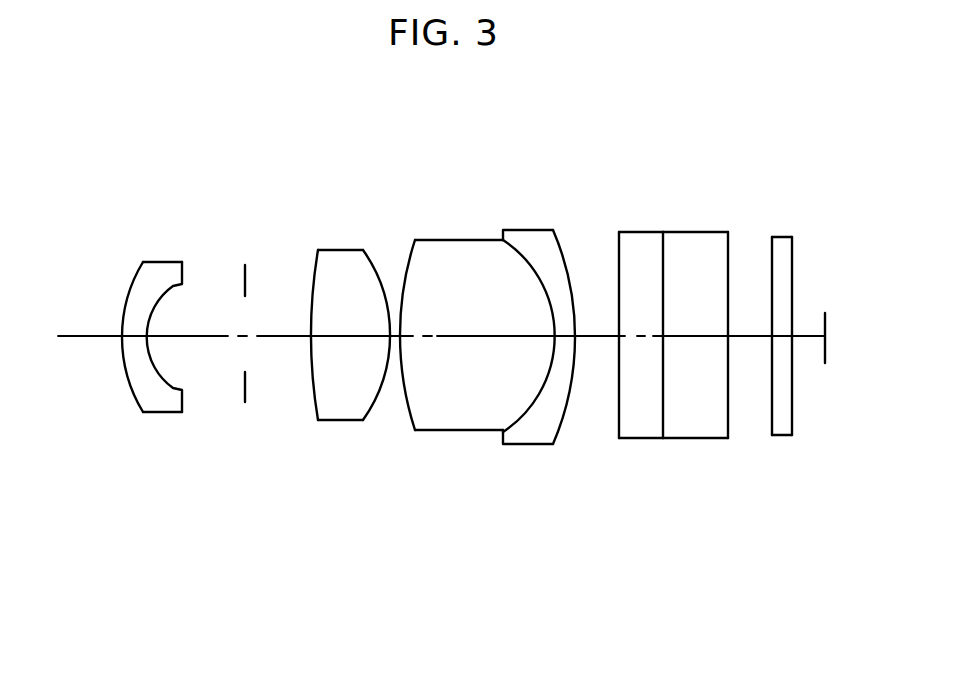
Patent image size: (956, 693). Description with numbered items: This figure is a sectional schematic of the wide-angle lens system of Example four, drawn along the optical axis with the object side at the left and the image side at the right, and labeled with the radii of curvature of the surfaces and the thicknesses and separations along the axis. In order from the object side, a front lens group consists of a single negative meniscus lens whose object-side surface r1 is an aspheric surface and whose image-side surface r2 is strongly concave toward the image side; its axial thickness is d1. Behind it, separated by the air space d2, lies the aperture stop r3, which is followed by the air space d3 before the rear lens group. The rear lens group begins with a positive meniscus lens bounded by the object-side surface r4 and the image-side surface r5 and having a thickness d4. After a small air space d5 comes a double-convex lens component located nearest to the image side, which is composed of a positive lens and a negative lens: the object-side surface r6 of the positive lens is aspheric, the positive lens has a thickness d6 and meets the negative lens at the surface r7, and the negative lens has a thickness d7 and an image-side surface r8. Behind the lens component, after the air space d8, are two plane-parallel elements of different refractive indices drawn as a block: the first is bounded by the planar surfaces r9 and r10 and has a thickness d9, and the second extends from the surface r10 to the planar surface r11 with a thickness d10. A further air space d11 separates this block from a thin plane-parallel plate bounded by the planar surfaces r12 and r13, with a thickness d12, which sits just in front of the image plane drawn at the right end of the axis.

The object-side surface of the negative meniscus lens r1 is at (143, 266).
The image-side surface of the negative meniscus lens r2 is at (188, 284).
The aperture stop r3 is at (243, 278).
The object-side surface of the positive meniscus lens r4 is at (322, 290).
The image-side surface of the positive meniscus lens r5 is at (377, 265).
The object-side surface of the positive lens of the double-convex lens component r6 is at (408, 258).
The cemented surface between the positive and negative lenses r7 is at (528, 258).
The image-side surface of the double-convex lens component r8 is at (569, 258).
The object-side surface of the first plane-parallel element r9 is at (618, 255).
The boundary surface between the plane-parallel elements r10 is at (662, 250).
The image-side surface of the second plane-parallel element r11 is at (727, 253).
The object-side surface of the plane-parallel plate r12 is at (772, 253).
The image-side surface of the plane-parallel plate r13 is at (793, 253).
The thickness of the negative meniscus lens d1 is at (135, 338).
The separation between the negative meniscus lens and the aperture stop d2 is at (207, 338).
The separation between the aperture stop and the positive meniscus lens d3 is at (277, 340).
The thickness of the positive meniscus lens d4 is at (350, 340).
The separation between the positive meniscus lens and the double-convex lens compone d5 is at (395, 340).
The thickness of the positive lens of the double-convex lens component d6 is at (468, 340).
The thickness of the negative lens of the double-convex lens component d7 is at (560, 340).
The separation between the double-convex lens component and the first plane-parallel d8 is at (593, 340).
The thickness of the first plane-parallel element d9 is at (640, 340).
The thickness of the second plane-parallel element d10 is at (697, 340).
The separation between the second plane-parallel element and the plane-parallel plat d11 is at (748, 340).
The thickness of the plane-parallel plate d12 is at (777, 340).